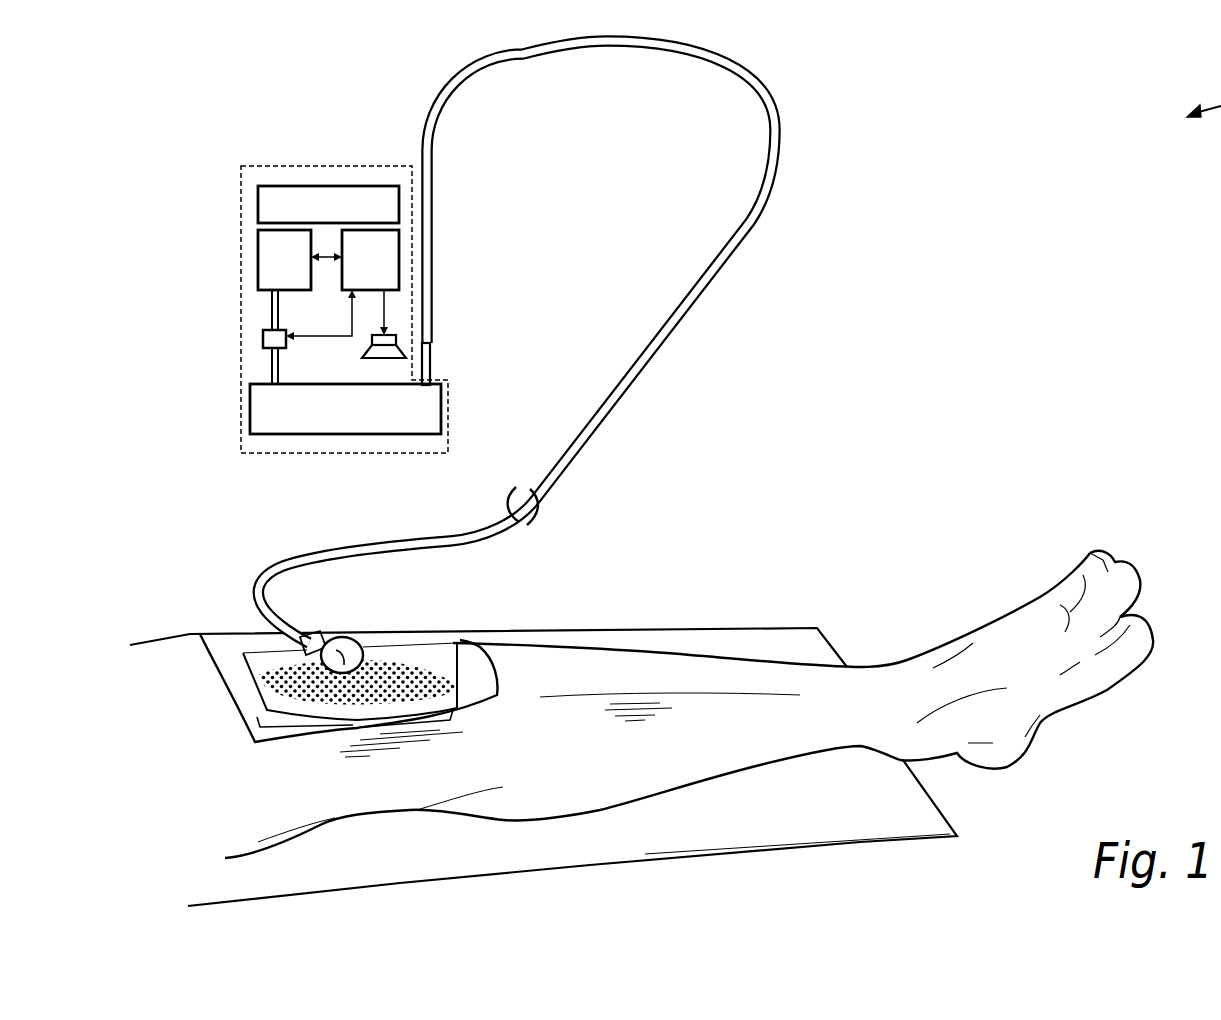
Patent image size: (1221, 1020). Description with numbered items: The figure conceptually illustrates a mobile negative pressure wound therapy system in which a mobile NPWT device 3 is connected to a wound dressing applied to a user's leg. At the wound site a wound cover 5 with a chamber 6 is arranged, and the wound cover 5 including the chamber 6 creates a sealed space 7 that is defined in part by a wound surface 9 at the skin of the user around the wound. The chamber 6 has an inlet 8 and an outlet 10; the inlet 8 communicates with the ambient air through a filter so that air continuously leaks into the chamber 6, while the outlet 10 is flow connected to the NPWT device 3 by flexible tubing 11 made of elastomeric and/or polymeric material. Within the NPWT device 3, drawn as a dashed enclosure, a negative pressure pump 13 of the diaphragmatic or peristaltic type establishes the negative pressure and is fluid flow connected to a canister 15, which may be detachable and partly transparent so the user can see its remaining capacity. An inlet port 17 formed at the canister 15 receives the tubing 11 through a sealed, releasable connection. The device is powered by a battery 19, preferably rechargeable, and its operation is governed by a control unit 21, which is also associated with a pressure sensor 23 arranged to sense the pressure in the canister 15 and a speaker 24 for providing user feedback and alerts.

The mobile NPWT device 3 is at (385, 166).
The wound cover 5 is at (247, 702).
The chamber 6 is at (360, 640).
The sealed space 7 is at (463, 687).
The inlet 8 is at (300, 637).
The wound surface 9 is at (353, 722).
The outlet 10 is at (323, 630).
The tubing 11 is at (697, 305).
The negative pressure pump 13 is at (258, 270).
The canister 15 is at (258, 417).
The inlet port 17 is at (432, 368).
The battery 19 is at (288, 186).
The control unit 21 is at (399, 257).
The pressure sensor 23 is at (263, 338).
The speaker 24 is at (378, 358).